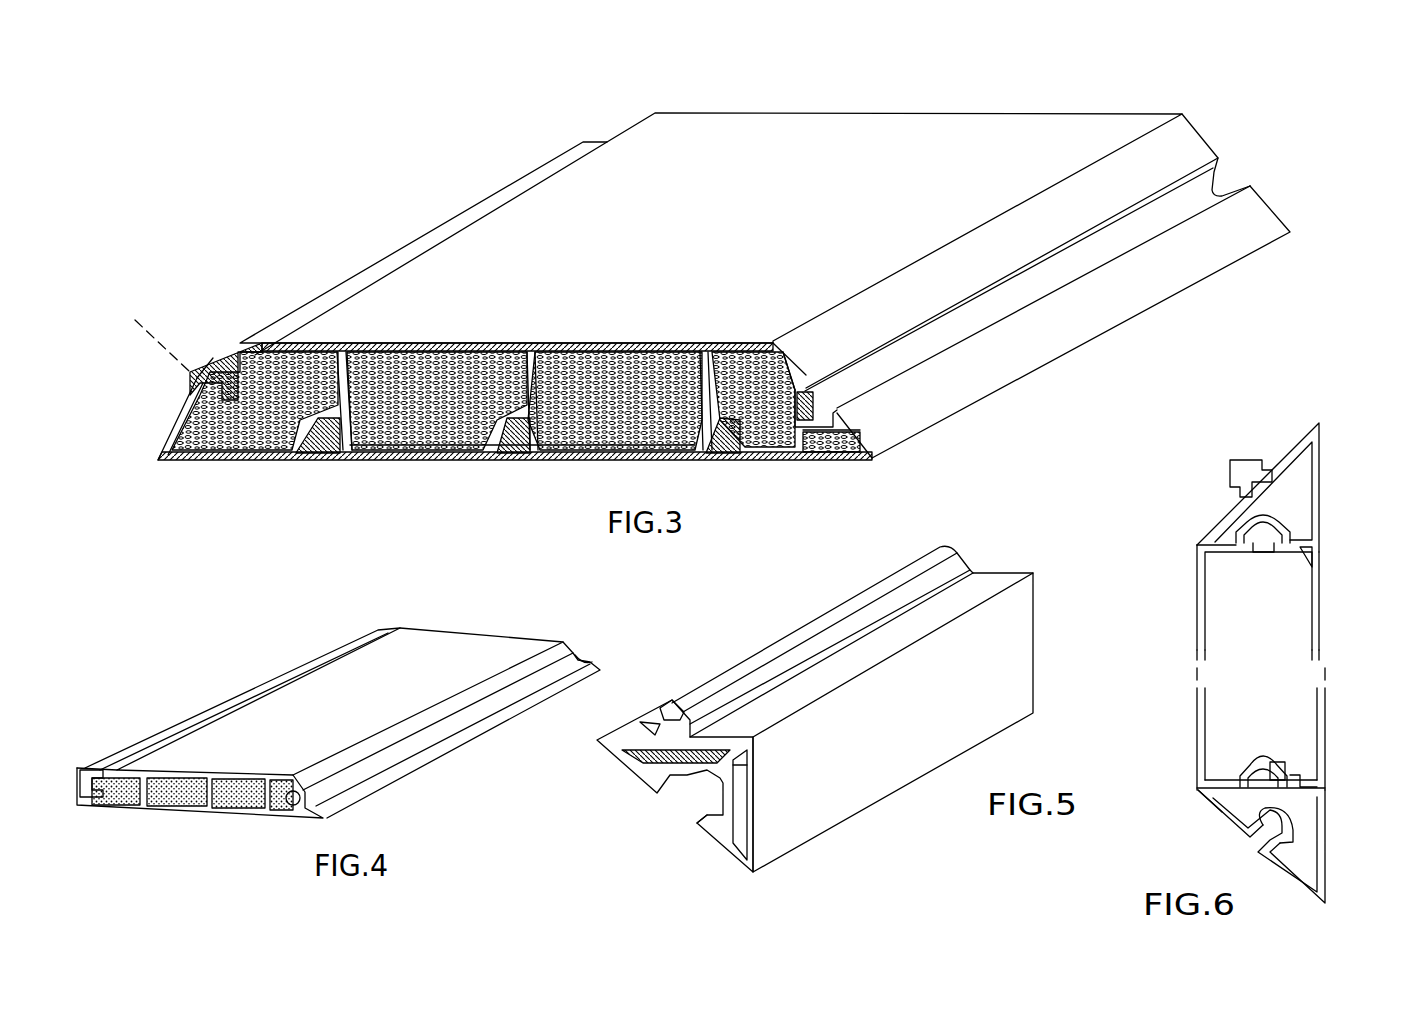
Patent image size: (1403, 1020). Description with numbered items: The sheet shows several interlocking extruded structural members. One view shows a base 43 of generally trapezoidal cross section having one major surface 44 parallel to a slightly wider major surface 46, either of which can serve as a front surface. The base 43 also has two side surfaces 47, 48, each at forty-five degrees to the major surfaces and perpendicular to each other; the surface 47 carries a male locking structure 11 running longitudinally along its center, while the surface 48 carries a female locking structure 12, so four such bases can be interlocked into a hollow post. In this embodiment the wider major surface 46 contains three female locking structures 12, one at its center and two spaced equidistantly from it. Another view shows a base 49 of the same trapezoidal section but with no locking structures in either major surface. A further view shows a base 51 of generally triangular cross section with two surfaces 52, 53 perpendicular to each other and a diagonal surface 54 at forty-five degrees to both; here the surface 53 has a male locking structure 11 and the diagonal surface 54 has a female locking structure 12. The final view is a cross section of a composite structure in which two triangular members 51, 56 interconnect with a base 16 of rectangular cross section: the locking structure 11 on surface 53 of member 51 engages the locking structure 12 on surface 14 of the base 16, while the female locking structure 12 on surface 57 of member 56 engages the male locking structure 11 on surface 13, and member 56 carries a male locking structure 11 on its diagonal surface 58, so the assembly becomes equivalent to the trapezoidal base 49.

In FIG. 4, the male locking structure 11 is at (85, 766).
In FIG. 5, the male locking structure 11 is at (672, 702).
In FIG. 6, the male locking structure 11 is at (1248, 457).
In FIG. 3, the female locking structure 12 is at (1230, 186).
In FIG. 4, the female locking structure 12 is at (577, 657).
In FIG. 5, the female locking structure 12 is at (697, 797).
In FIG. 6, the female locking structure 12 is at (1270, 520).
In FIG. 6, the surface 13 is at (1220, 543).
In FIG. 6, the surface 14 is at (1218, 802).
In FIG. 6, the base 16 is at (1325, 622).
In FIG. 3, the base 43 is at (407, 476).
In FIG. 3, the major surface 44 is at (1015, 130).
In FIG. 3, the major surface 46 is at (465, 462).
In FIG. 3, the side surface 47 is at (160, 443).
In FIG. 3, the side surface 48 is at (1112, 318).
In FIG. 4, the base 49 is at (158, 819).
In FIG. 5, the base 51 is at (1036, 617).
In FIG. 6, the base 51 is at (1330, 838).
In FIG. 5, the surface 52 is at (760, 812).
In FIG. 5, the surface 53 is at (997, 573).
In FIG. 6, the surface 53 is at (1305, 778).
In FIG. 5, the diagonal surface 54 is at (718, 850).
In FIG. 6, the triangular member 56 is at (1322, 500).
In FIG. 6, the surface 57 is at (1322, 566).
In FIG. 6, the diagonal surface 58 is at (1290, 448).